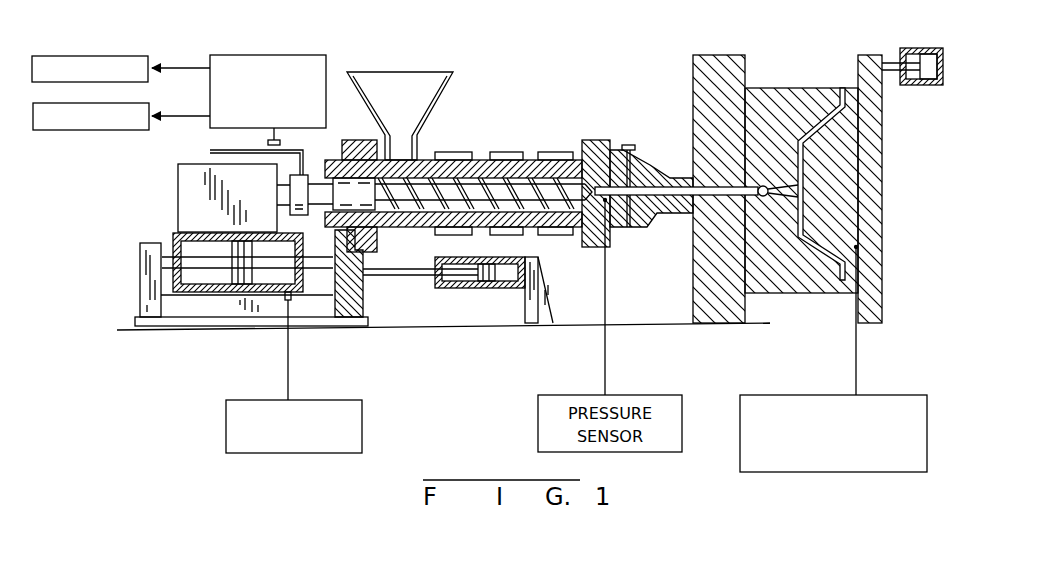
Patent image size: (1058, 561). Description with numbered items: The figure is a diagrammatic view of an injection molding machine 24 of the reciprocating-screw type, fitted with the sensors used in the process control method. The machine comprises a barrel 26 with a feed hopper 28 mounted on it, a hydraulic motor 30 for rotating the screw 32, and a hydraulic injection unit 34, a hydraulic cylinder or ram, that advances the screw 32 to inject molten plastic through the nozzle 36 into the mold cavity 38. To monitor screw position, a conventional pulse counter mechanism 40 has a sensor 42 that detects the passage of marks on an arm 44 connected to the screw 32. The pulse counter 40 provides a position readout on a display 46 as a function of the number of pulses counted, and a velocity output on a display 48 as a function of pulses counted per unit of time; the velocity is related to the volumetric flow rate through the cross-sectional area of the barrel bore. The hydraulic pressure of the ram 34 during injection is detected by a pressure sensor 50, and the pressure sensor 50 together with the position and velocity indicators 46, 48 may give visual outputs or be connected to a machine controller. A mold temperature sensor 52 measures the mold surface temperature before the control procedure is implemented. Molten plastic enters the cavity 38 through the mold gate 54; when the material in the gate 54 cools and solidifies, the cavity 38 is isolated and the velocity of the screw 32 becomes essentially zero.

The injection molding machine 24 is at (591, 96).
The barrel 26 is at (483, 165).
The feed hopper 28 is at (405, 80).
The hydraulic motor 30 is at (178, 186).
The screw 32 is at (538, 188).
The hydraulic injection unit 34 is at (218, 292).
The nozzle 36 is at (670, 178).
The mold cavity 38 is at (823, 125).
The pulse counter mechanism 40 is at (252, 55).
The sensor 42 is at (282, 142).
The arm 44 is at (226, 150).
The position display 46 is at (93, 56).
The velocity display 48 is at (97, 130).
The pressure sensor 50 is at (255, 455).
The mold temperature sensor 52 is at (740, 448).
The mold gate 54 is at (726, 196).